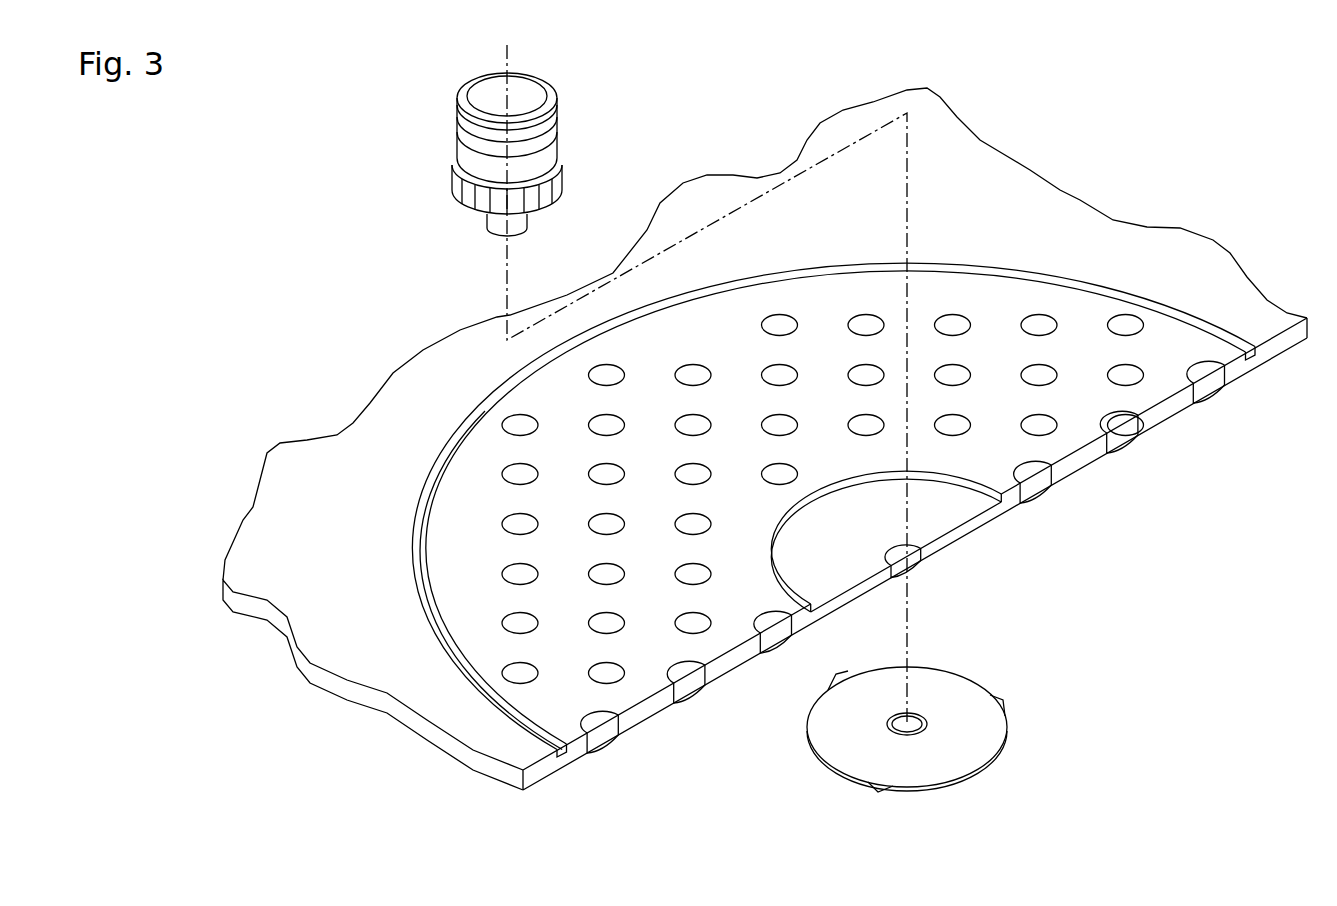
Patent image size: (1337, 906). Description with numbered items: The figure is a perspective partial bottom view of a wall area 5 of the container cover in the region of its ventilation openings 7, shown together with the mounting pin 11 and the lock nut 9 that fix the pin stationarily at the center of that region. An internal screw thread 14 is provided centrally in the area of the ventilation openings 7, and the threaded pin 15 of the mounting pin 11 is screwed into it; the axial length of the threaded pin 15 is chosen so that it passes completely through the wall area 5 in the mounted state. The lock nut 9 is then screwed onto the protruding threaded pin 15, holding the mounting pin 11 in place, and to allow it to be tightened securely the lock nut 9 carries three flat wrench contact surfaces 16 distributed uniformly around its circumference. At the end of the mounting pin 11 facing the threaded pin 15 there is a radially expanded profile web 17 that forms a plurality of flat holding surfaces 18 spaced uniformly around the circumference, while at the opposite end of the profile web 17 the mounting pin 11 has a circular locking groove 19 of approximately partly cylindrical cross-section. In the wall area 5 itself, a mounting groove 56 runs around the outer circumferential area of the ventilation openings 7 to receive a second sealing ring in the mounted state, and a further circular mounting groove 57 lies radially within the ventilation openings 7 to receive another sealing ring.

The wall area 5 is at (1105, 272).
The ventilation openings 7 is at (1030, 370).
The lock nut 9 is at (967, 762).
The mounting pin 11 is at (470, 93).
The central hole / notch 14 is at (912, 555).
The threaded pin 15 is at (500, 227).
The wrench contact surfaces 16 is at (1000, 712).
The profile web 17 is at (562, 172).
The holding surfaces 18 is at (500, 202).
The locking groove 19 is at (547, 138).
The mounting groove 56 is at (1253, 350).
The mounting groove 57 is at (1035, 500).